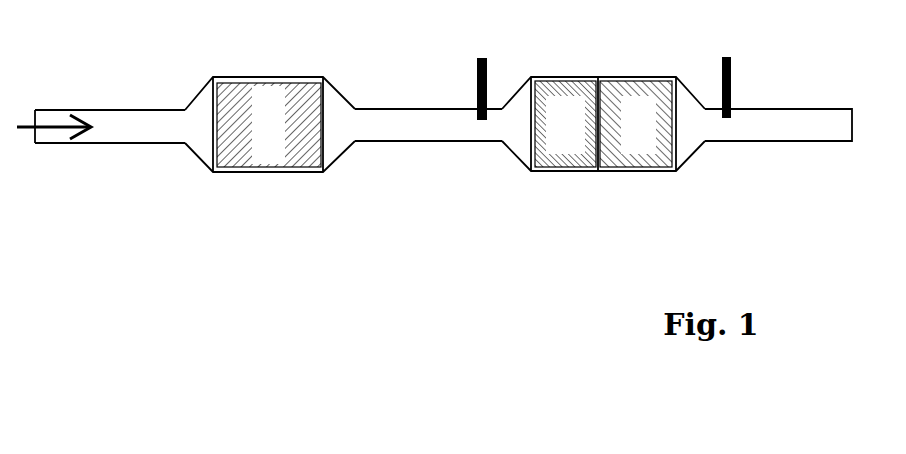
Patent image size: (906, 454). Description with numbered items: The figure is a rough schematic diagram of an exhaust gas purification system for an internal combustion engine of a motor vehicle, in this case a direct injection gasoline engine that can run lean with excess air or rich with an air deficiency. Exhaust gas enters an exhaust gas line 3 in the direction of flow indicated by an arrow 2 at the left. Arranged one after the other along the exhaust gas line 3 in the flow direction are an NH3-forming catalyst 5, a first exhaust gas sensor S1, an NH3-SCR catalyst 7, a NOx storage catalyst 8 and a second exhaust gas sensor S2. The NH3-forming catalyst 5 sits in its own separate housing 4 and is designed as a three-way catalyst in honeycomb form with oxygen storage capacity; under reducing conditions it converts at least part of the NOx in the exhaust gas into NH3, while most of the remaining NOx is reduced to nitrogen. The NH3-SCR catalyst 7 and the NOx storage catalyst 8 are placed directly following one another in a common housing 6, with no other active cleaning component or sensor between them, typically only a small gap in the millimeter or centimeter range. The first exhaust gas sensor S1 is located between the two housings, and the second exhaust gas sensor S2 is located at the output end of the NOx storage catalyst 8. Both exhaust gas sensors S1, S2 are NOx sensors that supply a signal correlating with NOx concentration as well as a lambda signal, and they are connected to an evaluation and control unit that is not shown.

The arrow 2 is at (53, 128).
The exhaust gas line 3 is at (435, 142).
The separate housing 4 is at (335, 162).
The NH3-forming catalyst 5 is at (247, 172).
The common housing 6 is at (693, 152).
The NH3-SCR catalyst 7 is at (563, 158).
The NOx storage catalyst 8 is at (632, 158).
The first exhaust gas sensor S1 is at (490, 75).
The second exhaust gas sensor S2 is at (732, 68).